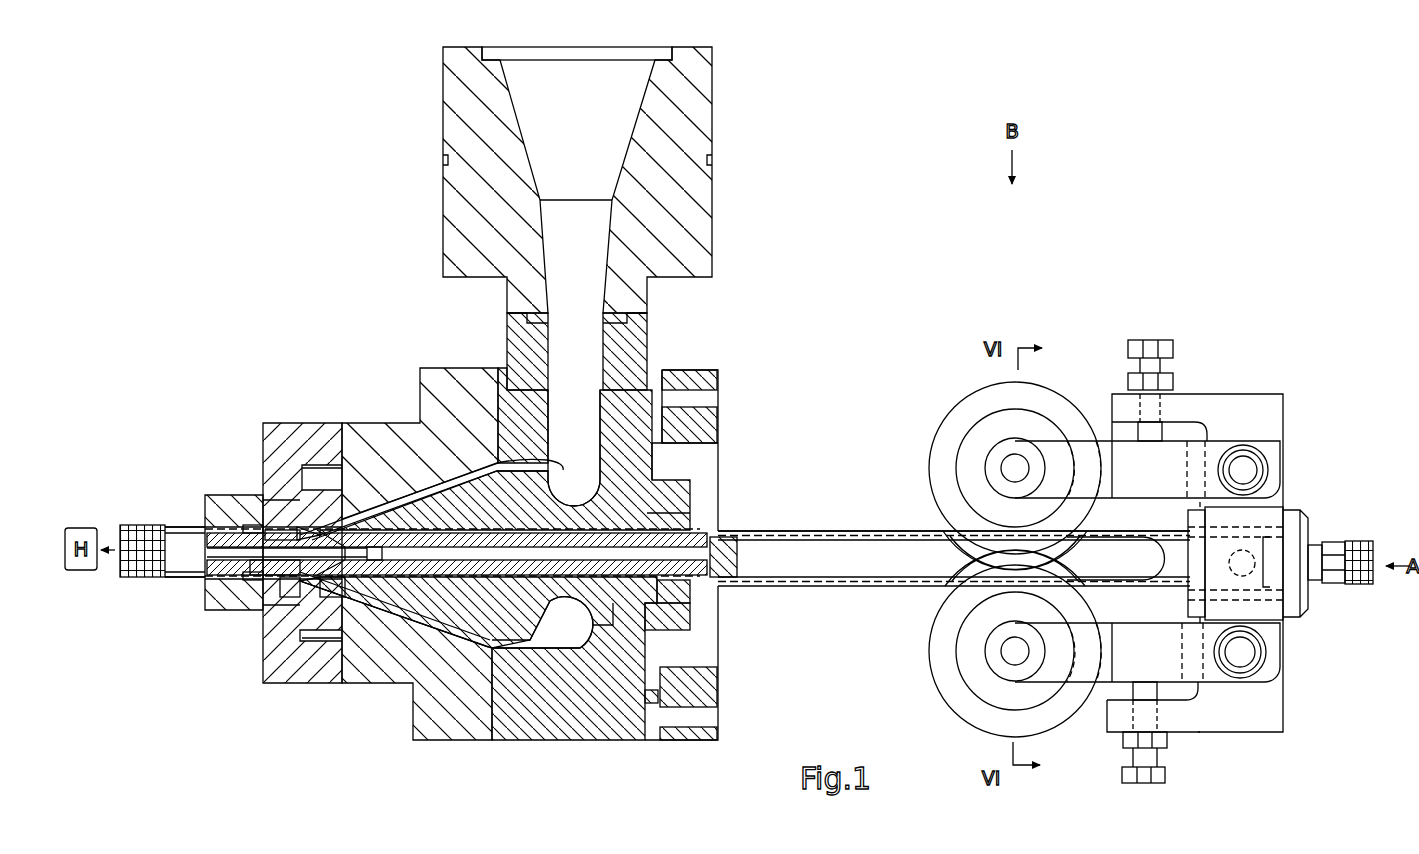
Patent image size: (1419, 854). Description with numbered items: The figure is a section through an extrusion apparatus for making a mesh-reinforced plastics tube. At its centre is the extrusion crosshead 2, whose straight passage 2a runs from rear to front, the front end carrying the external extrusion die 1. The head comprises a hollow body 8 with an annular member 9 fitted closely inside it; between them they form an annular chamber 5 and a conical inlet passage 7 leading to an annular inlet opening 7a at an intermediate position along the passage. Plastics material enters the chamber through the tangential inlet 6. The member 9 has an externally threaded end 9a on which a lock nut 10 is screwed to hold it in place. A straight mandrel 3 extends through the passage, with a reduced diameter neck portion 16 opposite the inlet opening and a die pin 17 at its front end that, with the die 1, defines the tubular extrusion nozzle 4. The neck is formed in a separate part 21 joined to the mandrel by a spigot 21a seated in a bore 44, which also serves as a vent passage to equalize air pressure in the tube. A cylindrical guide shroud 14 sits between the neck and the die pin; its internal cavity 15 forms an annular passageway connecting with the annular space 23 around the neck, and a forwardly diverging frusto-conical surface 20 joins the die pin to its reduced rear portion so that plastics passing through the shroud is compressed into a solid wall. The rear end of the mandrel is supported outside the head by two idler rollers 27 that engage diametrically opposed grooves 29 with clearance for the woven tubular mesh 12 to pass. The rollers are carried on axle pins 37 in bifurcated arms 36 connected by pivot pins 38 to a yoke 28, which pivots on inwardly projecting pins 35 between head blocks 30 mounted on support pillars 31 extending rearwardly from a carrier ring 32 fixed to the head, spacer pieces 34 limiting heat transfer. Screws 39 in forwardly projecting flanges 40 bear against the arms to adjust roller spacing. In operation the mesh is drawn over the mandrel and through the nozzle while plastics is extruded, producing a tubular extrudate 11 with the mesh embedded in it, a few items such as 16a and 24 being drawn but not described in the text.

The external extrusion die 1 is at (218, 497).
The extrusion crosshead 2 is at (445, 371).
The straight passage 2a is at (538, 580).
The mandrel 3 is at (140, 577).
The tubular extrusion nozzle 4 is at (237, 583).
The annular chamber 5 is at (571, 636).
The tangential inlet 6 is at (597, 350).
The conical inlet passage 7 is at (462, 496).
The inlet opening 7a is at (345, 600).
The hollow body 8 is at (428, 395).
The annular member 9 is at (470, 493).
The externally threaded end 9a is at (695, 545).
The lock nut 10 is at (690, 485).
The tubular extrudate 11 is at (180, 527).
The woven tubular mesh 12 is at (196, 578).
The cylindrical guide shroud 14 is at (262, 500).
The internal cavity 15 is at (282, 600).
The reduced diameter neck portion 16 is at (320, 600).
The cone 16a is at (297, 520).
The die pin 17 is at (218, 580).
The forwardly diverging frusto-conical surface 20 is at (252, 590).
The part 21 is at (317, 520).
The spigot 21a is at (353, 520).
The annular space 23 is at (268, 520).
The plate 24 is at (200, 525).
The idler rollers 27 is at (968, 402).
The yoke 28 is at (1268, 395).
The grooves 29 is at (958, 548).
The head blocks 30 is at (1298, 530).
The support pillars 31 is at (860, 532).
The carrier ring 32 is at (718, 383).
The spacer pieces 34 is at (660, 386).
The inwardly projecting pins 35 is at (1250, 560).
The arms 36 is at (1105, 440).
The axle pin 37 is at (1018, 466).
The pivot pin 38 is at (1250, 468).
The screws 39 is at (1165, 342).
The flanges 40 is at (1180, 397).
The bore 44 is at (700, 535).